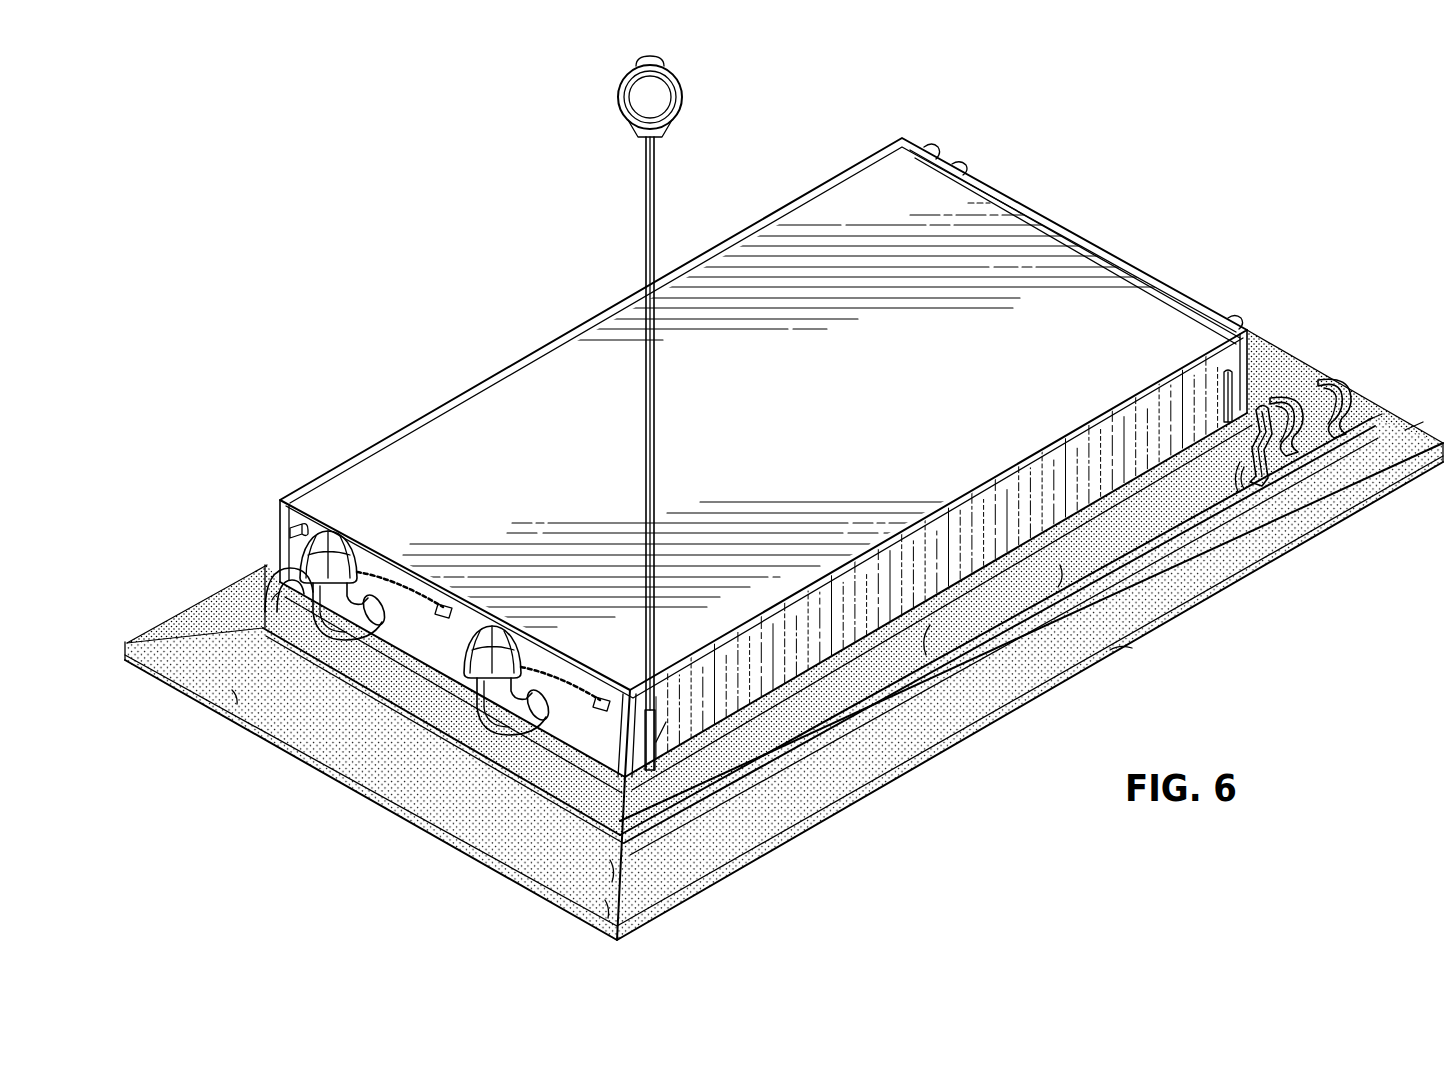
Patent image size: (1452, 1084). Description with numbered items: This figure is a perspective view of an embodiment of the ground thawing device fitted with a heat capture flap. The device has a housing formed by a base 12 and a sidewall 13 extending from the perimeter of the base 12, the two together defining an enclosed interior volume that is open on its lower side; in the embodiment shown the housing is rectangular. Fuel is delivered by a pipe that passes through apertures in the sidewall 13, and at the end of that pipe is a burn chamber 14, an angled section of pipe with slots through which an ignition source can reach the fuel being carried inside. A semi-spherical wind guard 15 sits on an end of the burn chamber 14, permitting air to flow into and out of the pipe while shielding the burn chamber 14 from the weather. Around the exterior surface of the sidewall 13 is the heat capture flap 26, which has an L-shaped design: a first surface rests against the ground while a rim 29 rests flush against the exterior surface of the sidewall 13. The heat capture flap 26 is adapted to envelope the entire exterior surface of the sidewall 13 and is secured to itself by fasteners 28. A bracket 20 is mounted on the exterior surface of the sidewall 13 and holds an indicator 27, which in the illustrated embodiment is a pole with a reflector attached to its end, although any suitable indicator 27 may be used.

The base 12 is at (960, 212).
The sidewall 13 is at (1209, 400).
The burn chamber 14 is at (312, 602).
The wind guard 15 is at (342, 531).
The bracket 20 is at (660, 738).
The heat capture flap 26 is at (767, 795).
The indicator 27 is at (645, 183).
The fasteners 28 is at (1340, 402).
The rim 29 is at (1070, 558).